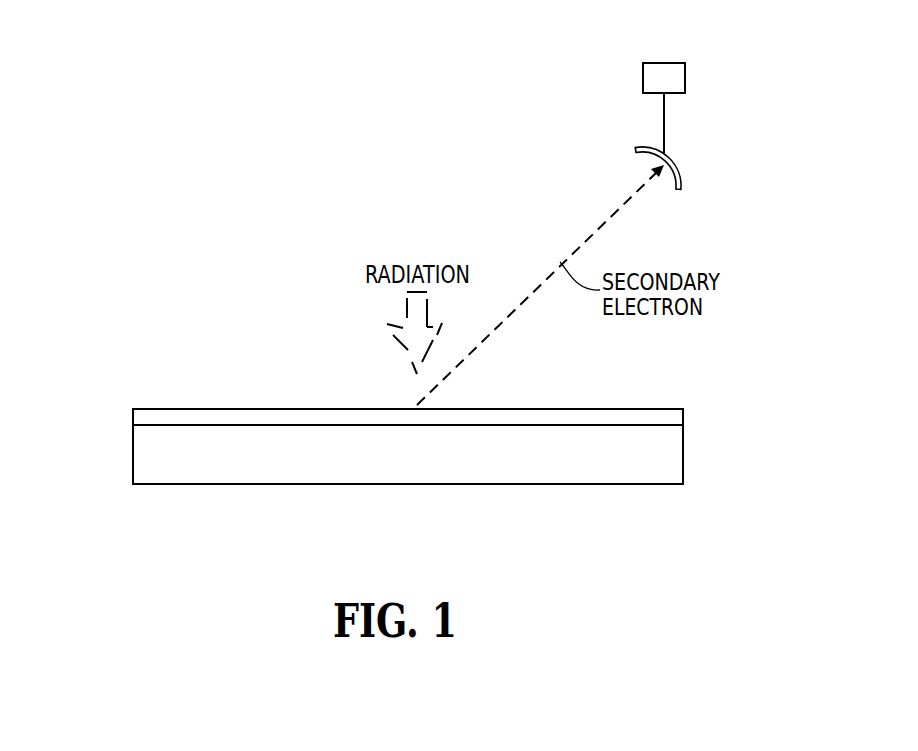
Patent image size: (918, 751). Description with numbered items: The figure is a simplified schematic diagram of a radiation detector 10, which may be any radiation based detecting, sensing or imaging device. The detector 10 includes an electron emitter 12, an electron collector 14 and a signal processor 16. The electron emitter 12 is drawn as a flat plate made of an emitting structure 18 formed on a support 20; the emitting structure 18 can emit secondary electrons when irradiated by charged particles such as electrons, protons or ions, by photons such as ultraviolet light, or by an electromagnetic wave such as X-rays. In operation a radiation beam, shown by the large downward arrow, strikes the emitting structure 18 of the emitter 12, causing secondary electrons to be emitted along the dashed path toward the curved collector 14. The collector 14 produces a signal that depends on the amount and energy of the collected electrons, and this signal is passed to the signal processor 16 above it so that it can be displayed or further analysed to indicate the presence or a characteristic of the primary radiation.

The radiation detector 10 is at (153, 106).
The electron emitter 12 is at (103, 398).
The electron collector 14 is at (680, 184).
The signal processor 16 is at (670, 77).
The emitting structure 18 is at (680, 418).
The support 20 is at (680, 456).